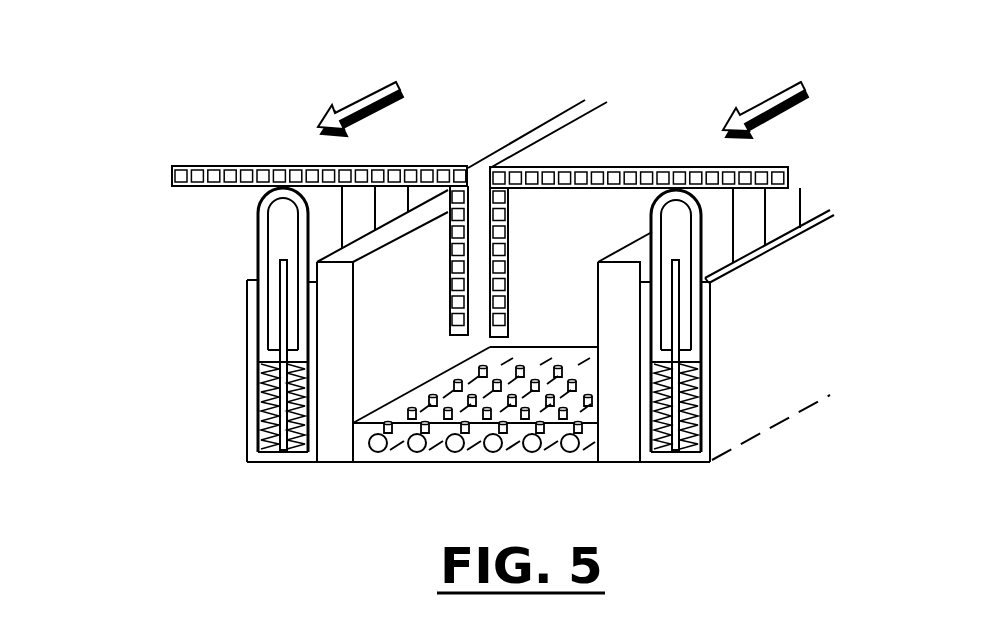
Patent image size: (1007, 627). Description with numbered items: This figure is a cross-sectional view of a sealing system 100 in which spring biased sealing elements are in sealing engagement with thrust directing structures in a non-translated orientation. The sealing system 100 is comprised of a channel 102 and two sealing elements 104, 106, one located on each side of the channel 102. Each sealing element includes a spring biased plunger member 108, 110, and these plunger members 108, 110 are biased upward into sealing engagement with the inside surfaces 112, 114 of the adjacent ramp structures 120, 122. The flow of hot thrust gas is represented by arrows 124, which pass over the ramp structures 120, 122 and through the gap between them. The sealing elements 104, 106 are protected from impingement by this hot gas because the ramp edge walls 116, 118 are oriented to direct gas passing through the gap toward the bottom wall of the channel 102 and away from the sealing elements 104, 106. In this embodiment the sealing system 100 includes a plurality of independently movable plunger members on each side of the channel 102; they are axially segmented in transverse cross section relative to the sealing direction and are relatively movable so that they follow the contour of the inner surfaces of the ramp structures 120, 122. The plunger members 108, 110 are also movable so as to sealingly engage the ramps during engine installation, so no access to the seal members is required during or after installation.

The sealing system 100 is at (287, 478).
The channel 102 is at (337, 432).
The sealing element 104 is at (240, 338).
The sealing element 106 is at (720, 351).
The spring biased plunger member 108 is at (258, 262).
The spring biased plunger member 110 is at (651, 212).
The inside surface 112 is at (232, 192).
The inside surface 114 is at (717, 196).
The ramp edge wall 116 is at (448, 275).
The ramp edge wall 118 is at (508, 268).
The ramp structure 120 is at (465, 149).
The ramp structure 122 is at (657, 145).
The arrows 124 is at (355, 92).